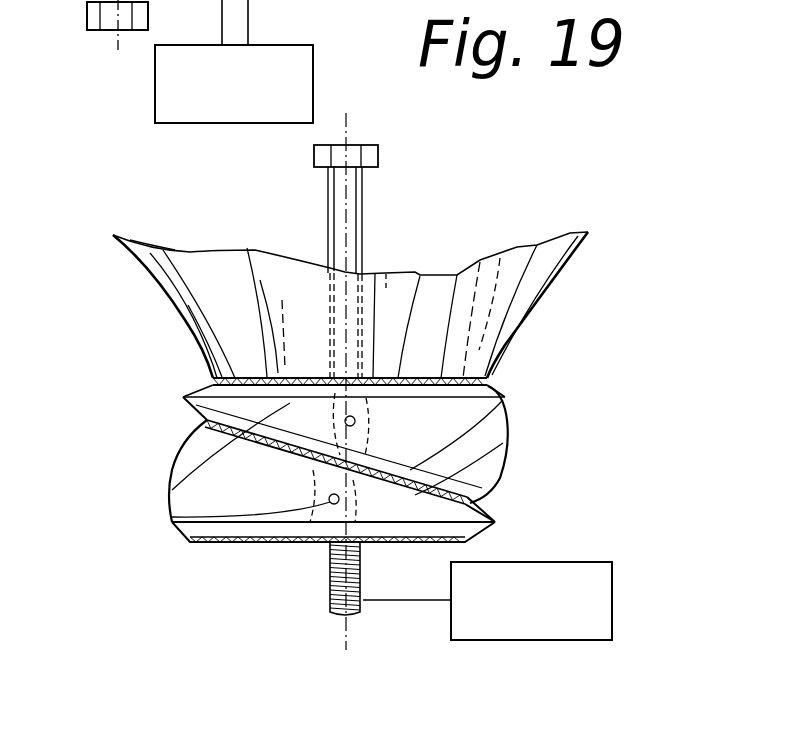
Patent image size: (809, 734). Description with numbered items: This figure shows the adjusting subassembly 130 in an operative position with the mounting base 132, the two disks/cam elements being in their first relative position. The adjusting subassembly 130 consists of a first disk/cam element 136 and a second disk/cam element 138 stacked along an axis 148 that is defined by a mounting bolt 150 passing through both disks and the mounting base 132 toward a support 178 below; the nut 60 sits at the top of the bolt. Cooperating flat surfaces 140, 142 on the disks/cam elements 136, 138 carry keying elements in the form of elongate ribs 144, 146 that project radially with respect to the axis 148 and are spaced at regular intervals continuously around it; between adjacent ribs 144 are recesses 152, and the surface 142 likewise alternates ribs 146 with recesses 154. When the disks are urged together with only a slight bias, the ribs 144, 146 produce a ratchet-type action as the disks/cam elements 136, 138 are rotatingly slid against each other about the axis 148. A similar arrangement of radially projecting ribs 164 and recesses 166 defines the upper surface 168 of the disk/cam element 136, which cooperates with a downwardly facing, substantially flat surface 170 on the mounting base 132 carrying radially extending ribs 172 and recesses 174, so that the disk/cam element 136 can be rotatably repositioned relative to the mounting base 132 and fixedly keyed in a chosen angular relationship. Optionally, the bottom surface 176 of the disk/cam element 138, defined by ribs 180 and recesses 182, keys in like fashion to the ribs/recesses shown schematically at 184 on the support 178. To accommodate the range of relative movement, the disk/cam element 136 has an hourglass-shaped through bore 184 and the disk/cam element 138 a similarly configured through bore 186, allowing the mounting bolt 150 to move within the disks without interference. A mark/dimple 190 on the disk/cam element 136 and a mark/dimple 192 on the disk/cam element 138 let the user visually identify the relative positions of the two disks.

The bolt 60 is at (87, 15).
The support 178 is at (214, 110).
The mounting bolt 150 is at (363, 203).
The axis 148 is at (347, 132).
The recesses 174 is at (387, 272).
The mounting base 132 is at (465, 262).
The mark/dimple 190 is at (272, 262).
The recesses 166 is at (200, 300).
The ribs 164 is at (198, 315).
The upper surface 168 is at (195, 337).
The adjusting subassembly 130 is at (556, 433).
The ribs 172 is at (183, 397).
The flat surface 140 is at (195, 425).
The flat surface 142 is at (475, 470).
The second disk/cam element 138 is at (170, 478).
The bottom surface 176 is at (200, 542).
The mark/dimple 192 is at (180, 540).
The ribs 180 is at (190, 543).
The recesses 182 is at (257, 542).
The recesses 152 is at (183, 483).
The flat surface 170 is at (292, 446).
The through bore 186 is at (320, 527).
The through bore 184 is at (360, 452).
The ribs 146 is at (503, 397).
The first disk/cam element 136 is at (510, 423).
The recesses 154 is at (508, 442).
The ribs 144 is at (480, 528).